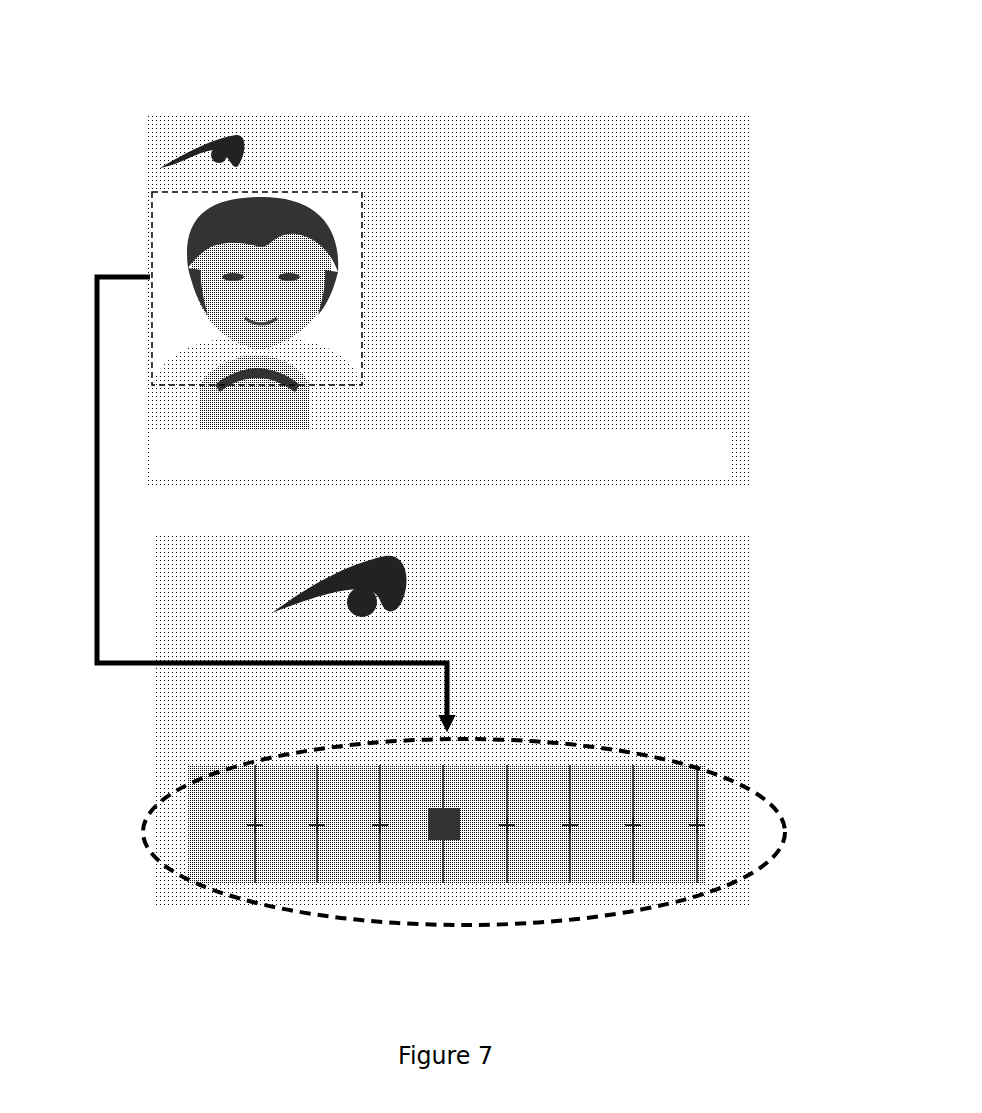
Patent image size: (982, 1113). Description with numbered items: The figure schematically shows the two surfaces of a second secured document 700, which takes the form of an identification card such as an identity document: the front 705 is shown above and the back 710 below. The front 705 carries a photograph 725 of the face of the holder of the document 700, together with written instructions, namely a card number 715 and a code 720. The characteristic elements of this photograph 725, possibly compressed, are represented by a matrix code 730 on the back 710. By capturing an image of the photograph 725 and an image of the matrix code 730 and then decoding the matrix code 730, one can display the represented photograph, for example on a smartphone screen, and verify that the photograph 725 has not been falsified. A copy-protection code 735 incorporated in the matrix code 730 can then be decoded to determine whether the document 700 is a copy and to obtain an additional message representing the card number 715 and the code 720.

The second secured document 700 is at (203, 78).
The front of the document 705 is at (728, 202).
The back of the document 710 is at (738, 596).
The written instructions (card number) 715 is at (608, 168).
The written instructions (code) 720 is at (728, 458).
The photograph 725 is at (170, 245).
The matrix code 730 is at (705, 777).
The copy-protection code 735 is at (440, 822).